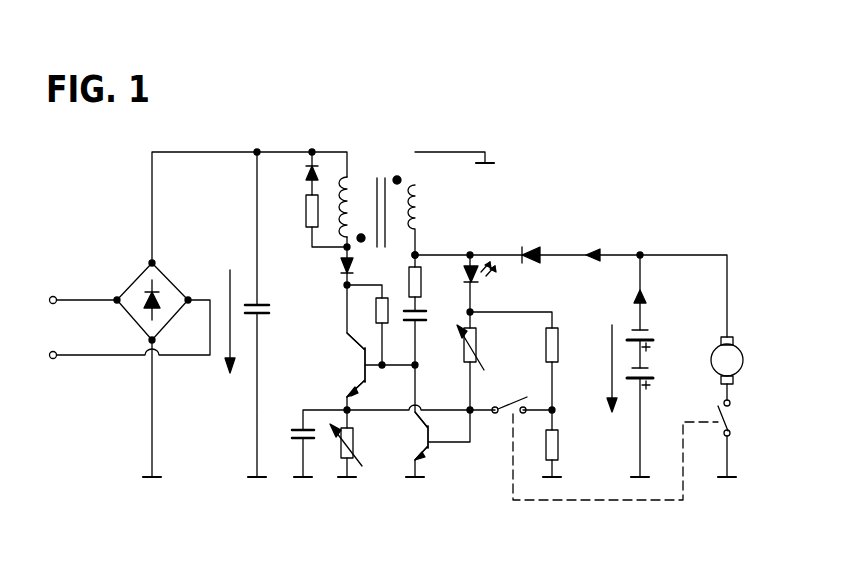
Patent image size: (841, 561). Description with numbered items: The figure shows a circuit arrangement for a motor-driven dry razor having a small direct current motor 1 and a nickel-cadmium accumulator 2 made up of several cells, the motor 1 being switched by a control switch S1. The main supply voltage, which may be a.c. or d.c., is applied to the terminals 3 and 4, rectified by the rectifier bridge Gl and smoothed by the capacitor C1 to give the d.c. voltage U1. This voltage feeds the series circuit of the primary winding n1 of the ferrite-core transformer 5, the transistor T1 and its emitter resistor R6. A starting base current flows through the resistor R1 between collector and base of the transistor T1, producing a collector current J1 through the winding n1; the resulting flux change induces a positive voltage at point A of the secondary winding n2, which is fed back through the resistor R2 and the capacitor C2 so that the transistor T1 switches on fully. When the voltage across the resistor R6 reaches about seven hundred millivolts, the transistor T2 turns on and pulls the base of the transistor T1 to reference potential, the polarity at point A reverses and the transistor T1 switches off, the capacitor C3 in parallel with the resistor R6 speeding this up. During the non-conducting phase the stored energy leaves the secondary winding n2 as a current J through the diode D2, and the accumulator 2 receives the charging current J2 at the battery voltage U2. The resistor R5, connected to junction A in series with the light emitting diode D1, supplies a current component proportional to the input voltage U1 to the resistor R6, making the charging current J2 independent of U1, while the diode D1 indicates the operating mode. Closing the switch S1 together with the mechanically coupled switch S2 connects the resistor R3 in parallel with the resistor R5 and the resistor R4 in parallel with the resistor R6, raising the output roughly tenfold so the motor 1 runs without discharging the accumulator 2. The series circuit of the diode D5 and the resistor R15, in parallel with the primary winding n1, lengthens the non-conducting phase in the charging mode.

The rectifier bridge Gl is at (127, 290).
The terminal 3 is at (75, 300).
The terminal 4 is at (121, 334).
The d.c. voltage U1 is at (231, 307).
The capacitor C1 is at (262, 304).
The diode D5 is at (305, 173).
The resistor R15 is at (306, 212).
The primary winding n1 is at (340, 214).
The transformer 5 is at (380, 176).
The secondary winding n2 is at (421, 204).
The current J1 is at (341, 267).
The point A is at (418, 253).
The resistor R2 is at (421, 283).
The capacitor C2 is at (420, 323).
The resistor R1 is at (376, 301).
The transistor T1 is at (365, 365).
The capacitor C3 is at (298, 430).
The resistor R6 is at (354, 452).
The transistor T2 is at (430, 453).
The light emitting diode D1 is at (482, 281).
The diode D2 is at (528, 247).
The current J is at (592, 253).
The charging current J2 is at (644, 304).
The battery voltage U2 is at (612, 355).
The accumulator 2 is at (648, 360).
The direct current motor 1 is at (738, 347).
The resistor R5 is at (478, 347).
The resistor R3 is at (560, 347).
The switch S2 is at (513, 404).
The resistor R4 is at (560, 447).
The control switch S1 is at (733, 424).